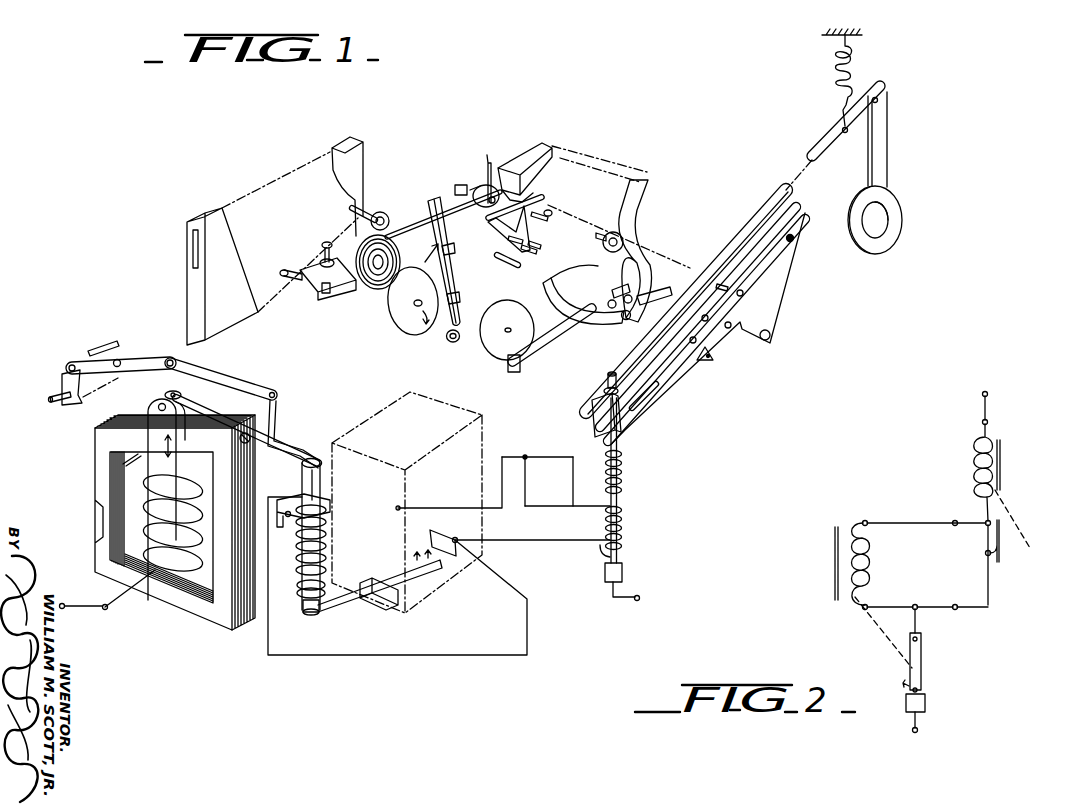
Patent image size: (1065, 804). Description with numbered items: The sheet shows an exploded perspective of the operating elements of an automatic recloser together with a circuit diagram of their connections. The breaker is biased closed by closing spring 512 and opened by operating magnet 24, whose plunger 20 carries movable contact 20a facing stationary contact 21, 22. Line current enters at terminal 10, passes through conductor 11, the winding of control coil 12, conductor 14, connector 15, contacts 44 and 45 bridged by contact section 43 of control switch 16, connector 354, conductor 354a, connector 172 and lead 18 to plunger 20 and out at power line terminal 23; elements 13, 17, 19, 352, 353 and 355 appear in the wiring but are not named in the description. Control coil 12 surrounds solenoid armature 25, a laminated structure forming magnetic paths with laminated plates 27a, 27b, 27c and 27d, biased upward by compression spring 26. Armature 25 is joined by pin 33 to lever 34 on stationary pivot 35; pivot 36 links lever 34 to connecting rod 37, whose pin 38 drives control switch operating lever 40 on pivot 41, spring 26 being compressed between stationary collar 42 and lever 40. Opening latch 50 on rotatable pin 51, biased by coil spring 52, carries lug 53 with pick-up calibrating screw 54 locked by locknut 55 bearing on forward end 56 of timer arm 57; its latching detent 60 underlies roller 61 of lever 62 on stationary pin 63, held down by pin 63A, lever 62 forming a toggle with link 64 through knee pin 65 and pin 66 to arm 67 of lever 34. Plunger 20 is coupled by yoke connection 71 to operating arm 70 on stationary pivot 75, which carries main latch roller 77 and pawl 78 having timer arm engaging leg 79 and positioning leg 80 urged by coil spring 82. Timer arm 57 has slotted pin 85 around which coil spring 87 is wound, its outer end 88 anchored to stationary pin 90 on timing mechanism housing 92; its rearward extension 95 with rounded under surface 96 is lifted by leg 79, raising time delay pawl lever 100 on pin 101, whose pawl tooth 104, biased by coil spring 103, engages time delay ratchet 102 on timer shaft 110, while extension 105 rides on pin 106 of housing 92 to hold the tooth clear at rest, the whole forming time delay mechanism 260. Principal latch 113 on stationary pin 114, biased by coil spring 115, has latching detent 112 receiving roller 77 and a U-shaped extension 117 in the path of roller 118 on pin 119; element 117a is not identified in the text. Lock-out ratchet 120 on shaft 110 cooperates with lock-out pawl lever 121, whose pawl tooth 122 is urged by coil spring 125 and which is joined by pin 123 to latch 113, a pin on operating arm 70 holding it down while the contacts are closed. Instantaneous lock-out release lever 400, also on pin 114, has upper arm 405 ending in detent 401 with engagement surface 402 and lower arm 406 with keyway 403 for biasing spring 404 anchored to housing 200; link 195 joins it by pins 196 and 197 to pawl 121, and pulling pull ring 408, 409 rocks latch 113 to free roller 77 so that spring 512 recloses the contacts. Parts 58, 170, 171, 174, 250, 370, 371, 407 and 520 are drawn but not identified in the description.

In FIG. 1, the terminal 10 is at (64, 609).
In FIG. 2, the terminal 10 is at (988, 393).
In FIG. 1, the conductor 11 is at (100, 606).
In FIG. 2, the conductor 11 is at (988, 414).
In FIG. 1, the control coil 12 is at (157, 603).
In FIG. 2, the control coil 12 is at (980, 470).
In FIG. 1, the armature plunger 13 is at (159, 479).
In FIG. 1, the conductor 14 is at (423, 654).
In FIG. 2, the conductor 14 is at (973, 526).
In FIG. 1, the connector 15 is at (456, 537).
In FIG. 2, the connector 15 is at (955, 520).
In FIG. 1, the control switch 16 is at (410, 431).
In FIG. 1, the lead 17 is at (573, 542).
In FIG. 2, the lead 17 is at (867, 520).
In FIG. 1, the lead 18 is at (571, 457).
In FIG. 2, the lead 18 is at (912, 622).
In FIG. 1, the coil tap 19 is at (619, 499).
In FIG. 1, the plunger 20 is at (631, 480).
In FIG. 2, the plunger 20 is at (923, 652).
In FIG. 1, the movable contact 20a is at (619, 544).
In FIG. 2, the movable contact 20a is at (903, 684).
In FIG. 1, the stationary contact 21 is at (620, 558).
In FIG. 2, the stationary contact 21 is at (923, 686).
In FIG. 1, the stationary contact 22 is at (624, 580).
In FIG. 2, the stationary contact 22 is at (927, 702).
In FIG. 1, the power line terminal 23 is at (640, 598).
In FIG. 2, the power line terminal 23 is at (919, 730).
In FIG. 1, the operating magnet 24 is at (632, 528).
In FIG. 2, the operating magnet 24 is at (863, 552).
In FIG. 1, the solenoid armature 25 is at (166, 499).
In FIG. 1, the compression spring 26 is at (327, 560).
In FIG. 1, the laminated magnetic plate 27a is at (214, 478).
In FIG. 1, the laminated magnetic plate 27b is at (100, 470).
In FIG. 1, the laminated magnetic plate 27c is at (198, 616).
In FIG. 1, the laminated magnetic plate 27d is at (222, 556).
In FIG. 1, the pin 33 is at (184, 396).
In FIG. 1, the lever 34 is at (277, 460).
In FIG. 2, the lever 34 is at (989, 422).
In FIG. 1, the stationary pivot 35 is at (249, 429).
In FIG. 1, the pivot 36 is at (300, 490).
In FIG. 1, the connecting rod 37 is at (326, 497).
In FIG. 1, the pin 38 is at (319, 626).
In FIG. 1, the control switch operating lever 40 is at (360, 600).
In FIG. 1, the pivot 41 is at (400, 596).
In FIG. 1, the stationary collar 42 is at (300, 600).
In FIG. 1, the contact section 43 is at (446, 561).
In FIG. 2, the contact section 43 is at (1003, 556).
In FIG. 1, the stationary contact 44 is at (432, 553).
In FIG. 2, the stationary contact 44 is at (987, 520).
In FIG. 1, the stationary contact 45 is at (415, 544).
In FIG. 2, the stationary contact 45 is at (985, 555).
In FIG. 1, the opening latch 50 is at (62, 386).
In FIG. 1, the rotatable pin 51 is at (92, 392).
In FIG. 1, the coil spring 52 is at (52, 400).
In FIG. 1, the lug 53 is at (292, 269).
In FIG. 1, the pick-up calibrating screw 54 is at (329, 244).
In FIG. 1, the locknut 55 is at (322, 252).
In FIG. 1, the forward end of timer arm 56 is at (322, 291).
In FIG. 1, the timer arm 57 is at (425, 256).
In FIG. 1, the bracket 58 is at (338, 294).
In FIG. 1, the latching detent 60 is at (64, 369).
In FIG. 1, the roller 61 is at (70, 362).
In FIG. 1, the lever 62 is at (142, 358).
In FIG. 1, the stationary pin 63 is at (121, 358).
In FIG. 1, the pin 63A is at (115, 341).
In FIG. 1, the link 64 is at (245, 380).
In FIG. 1, the knee pin 65 is at (178, 360).
In FIG. 1, the pin 66 is at (280, 394).
In FIG. 1, the upwardly extending arm 67 is at (275, 429).
In FIG. 1, the operating arm 70 is at (691, 381).
In FIG. 1, the yoke connection 71 is at (632, 427).
In FIG. 1, the stationary pivot 75 is at (795, 239).
In FIG. 1, the main latch roller 77 is at (609, 233).
In FIG. 1, the pawl 78 is at (550, 210).
In FIG. 1, the timer arm engaging leg 79 is at (512, 240).
In FIG. 1, the positioning leg 80 is at (534, 252).
In FIG. 1, the coil spring 82 is at (540, 196).
In FIG. 1, the slotted pin 85 is at (375, 290).
In FIG. 1, the coil spring 87 is at (389, 223).
In FIG. 1, the outer end of coil spring 88 is at (350, 211).
In FIG. 1, the stationary pin 90 is at (340, 206).
In FIG. 1, the timing mechanism housing 92 is at (205, 212).
In FIG. 1, the rearward extension 95 is at (490, 174).
In FIG. 1, the rounded under surface 96 is at (496, 224).
In FIG. 1, the time delay pawl lever 100 is at (452, 268).
In FIG. 1, the pin 101 is at (443, 214).
In FIG. 1, the time delay ratchet 102 is at (412, 331).
In FIG. 1, the coil spring 103 is at (452, 250).
In FIG. 1, the pawl tooth 104 is at (458, 298).
In FIG. 1, the extension 105 is at (458, 315).
In FIG. 1, the pin 106 is at (451, 343).
In FIG. 1, the timer shaft 110 is at (414, 306).
In FIG. 1, the latching detent 112 is at (628, 188).
In FIG. 1, the principal latch 113 is at (638, 240).
In FIG. 1, the stationary pin 114 is at (625, 322).
In FIG. 1, the coil spring 115 is at (605, 315).
In FIG. 1, the U-shaped extension 117 is at (530, 145).
In FIG. 1, the block lug 117a is at (527, 186).
In FIG. 1, the roller 118 is at (480, 185).
In FIG. 1, the pin 119 is at (460, 185).
In FIG. 1, the lock-out ratchet 120 is at (523, 328).
In FIG. 1, the lock-out pawl lever 121 is at (536, 356).
In FIG. 1, the pawl tooth 122 is at (509, 370).
In FIG. 1, the pin 123 is at (615, 289).
In FIG. 1, the coil spring 125 is at (625, 294).
In FIG. 1, the plate 170 is at (773, 304).
In FIG. 1, the rail 171 is at (757, 213).
In FIG. 1, the connector 172 is at (525, 455).
In FIG. 2, the connector 172 is at (916, 604).
In FIG. 1, the slot 174 is at (655, 394).
In FIG. 1, the link 195 is at (629, 319).
In FIG. 1, the pin 196 is at (655, 292).
In FIG. 1, the pin 197 is at (608, 300).
In FIG. 1, the housing 200 is at (864, 30).
In FIG. 1, the axis line 250 is at (646, 176).
In FIG. 1, the time delay mechanism 260 is at (281, 166).
In FIG. 1, the lead 352 is at (527, 487).
In FIG. 2, the lead 352 is at (905, 604).
In FIG. 1, the lead 353 is at (588, 509).
In FIG. 2, the lead 353 is at (860, 610).
In FIG. 1, the connector 354 is at (396, 509).
In FIG. 2, the connector 354 is at (955, 604).
In FIG. 1, the conductor 354a is at (455, 508).
In FIG. 2, the conductor 354a is at (925, 610).
In FIG. 1, the lead 355 is at (528, 541).
In FIG. 2, the lead 355 is at (918, 522).
In FIG. 1, the block 370 is at (455, 196).
In FIG. 1, the bar 371 is at (429, 200).
In FIG. 1, the instantaneous lock-out release lever 400 is at (589, 331).
In FIG. 1, the detent 401 is at (582, 258).
In FIG. 1, the engagement surface 402 is at (590, 265).
In FIG. 1, the keyway 403 is at (841, 130).
In FIG. 1, the biasing spring 404 is at (858, 75).
In FIG. 1, the upper arm 405 is at (546, 286).
In FIG. 1, the lower arm 406 is at (815, 165).
In FIG. 1, the rail 407 is at (689, 264).
In FIG. 1, the pull ring 408 is at (888, 148).
In FIG. 1, the pull ring 409 is at (889, 220).
In FIG. 1, the closing spring 512 is at (633, 415).
In FIG. 1, the housing edge 520 is at (482, 428).